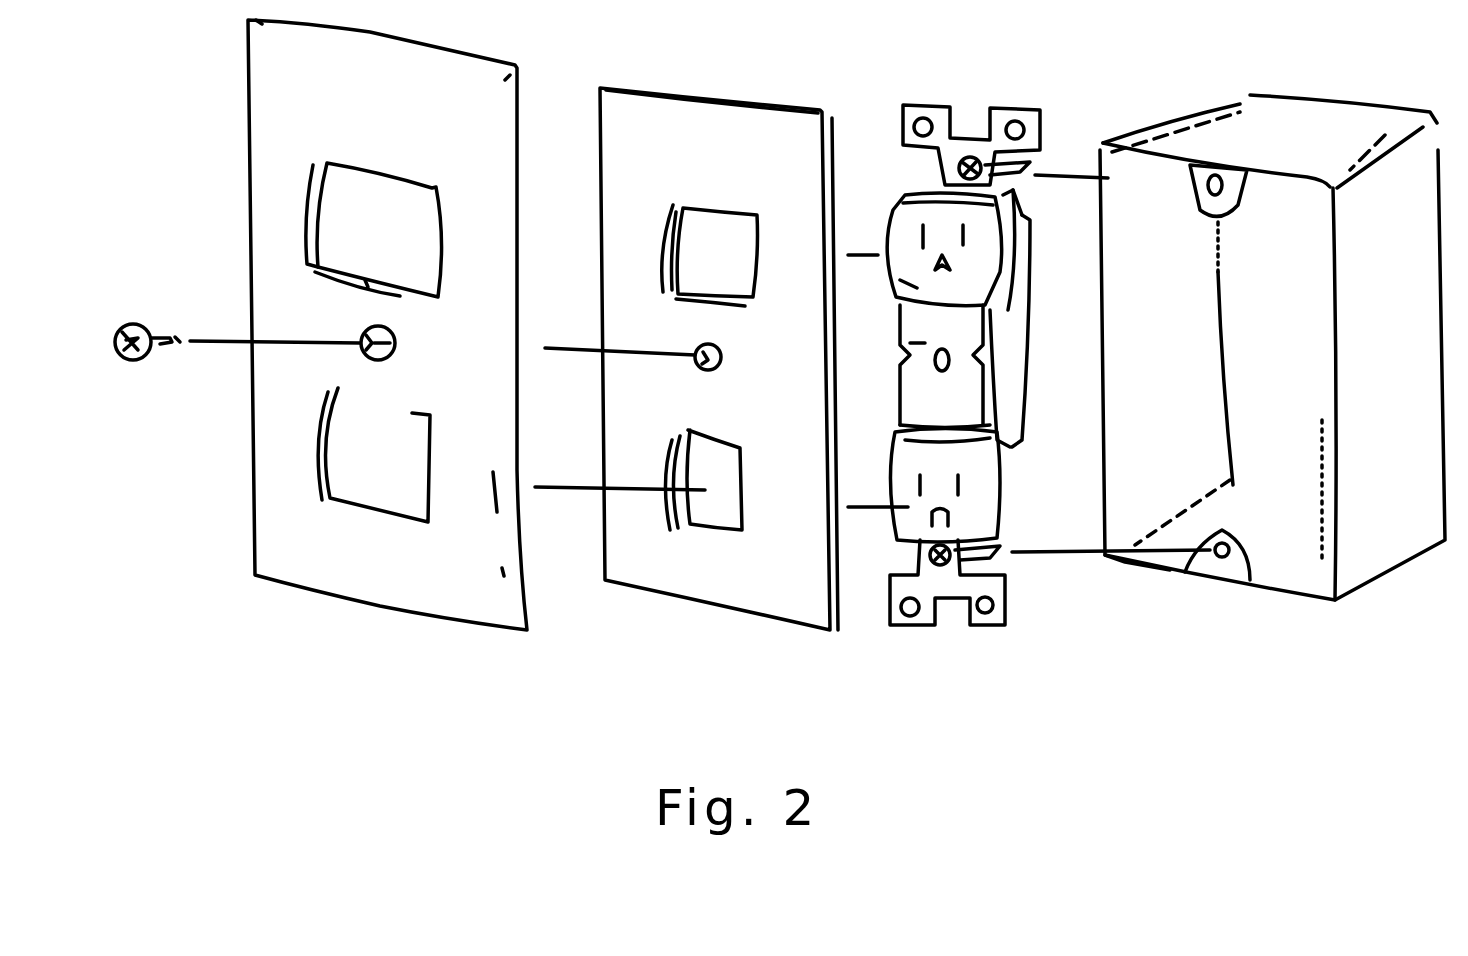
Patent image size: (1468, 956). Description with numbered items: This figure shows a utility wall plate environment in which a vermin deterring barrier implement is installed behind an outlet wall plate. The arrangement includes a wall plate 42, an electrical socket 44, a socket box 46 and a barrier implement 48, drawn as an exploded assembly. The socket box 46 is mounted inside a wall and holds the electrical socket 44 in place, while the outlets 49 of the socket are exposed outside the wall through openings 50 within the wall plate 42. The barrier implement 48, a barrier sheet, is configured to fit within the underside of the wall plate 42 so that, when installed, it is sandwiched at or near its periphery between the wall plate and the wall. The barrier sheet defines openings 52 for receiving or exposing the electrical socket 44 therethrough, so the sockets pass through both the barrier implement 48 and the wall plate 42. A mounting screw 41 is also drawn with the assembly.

The wall plate 42 is at (408, 57).
The barrier implement 48 is at (705, 125).
The electrical socket 44 is at (1022, 110).
The socket box 46 is at (1297, 115).
The openings 50 is at (323, 206).
The openings 52 is at (530, 250).
The outlets 49 is at (892, 462).
The mounting screw 41 is at (405, 342).